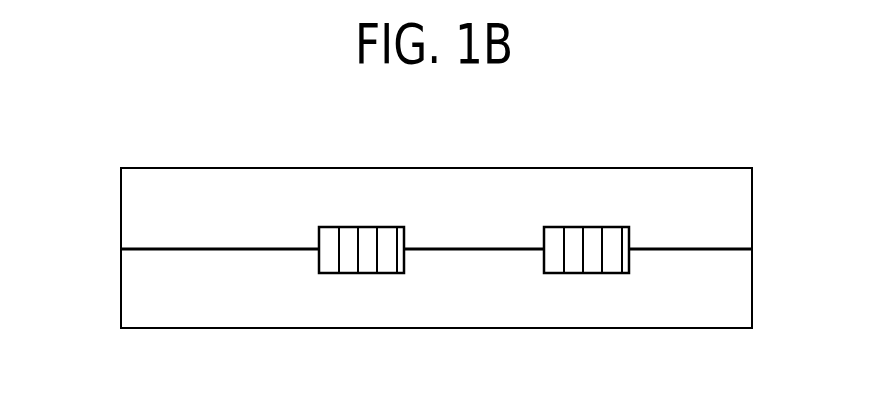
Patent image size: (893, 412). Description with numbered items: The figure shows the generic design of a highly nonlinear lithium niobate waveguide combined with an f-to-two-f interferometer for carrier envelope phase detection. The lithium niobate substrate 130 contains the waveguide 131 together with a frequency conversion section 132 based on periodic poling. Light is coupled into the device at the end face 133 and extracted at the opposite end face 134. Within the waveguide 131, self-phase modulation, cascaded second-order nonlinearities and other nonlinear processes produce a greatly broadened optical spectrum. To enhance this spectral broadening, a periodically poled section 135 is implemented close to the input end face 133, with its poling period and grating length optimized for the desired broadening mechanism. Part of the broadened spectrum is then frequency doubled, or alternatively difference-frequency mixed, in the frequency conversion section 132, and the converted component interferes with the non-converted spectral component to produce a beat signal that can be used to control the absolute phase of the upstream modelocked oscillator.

The substrate body 130 is at (269, 328).
The waveguide 131 is at (270, 168).
The frequency conversion section 132 is at (589, 227).
The end face 133 is at (121, 249).
The end face 134 is at (752, 249).
The periodically poled section 135 is at (383, 227).